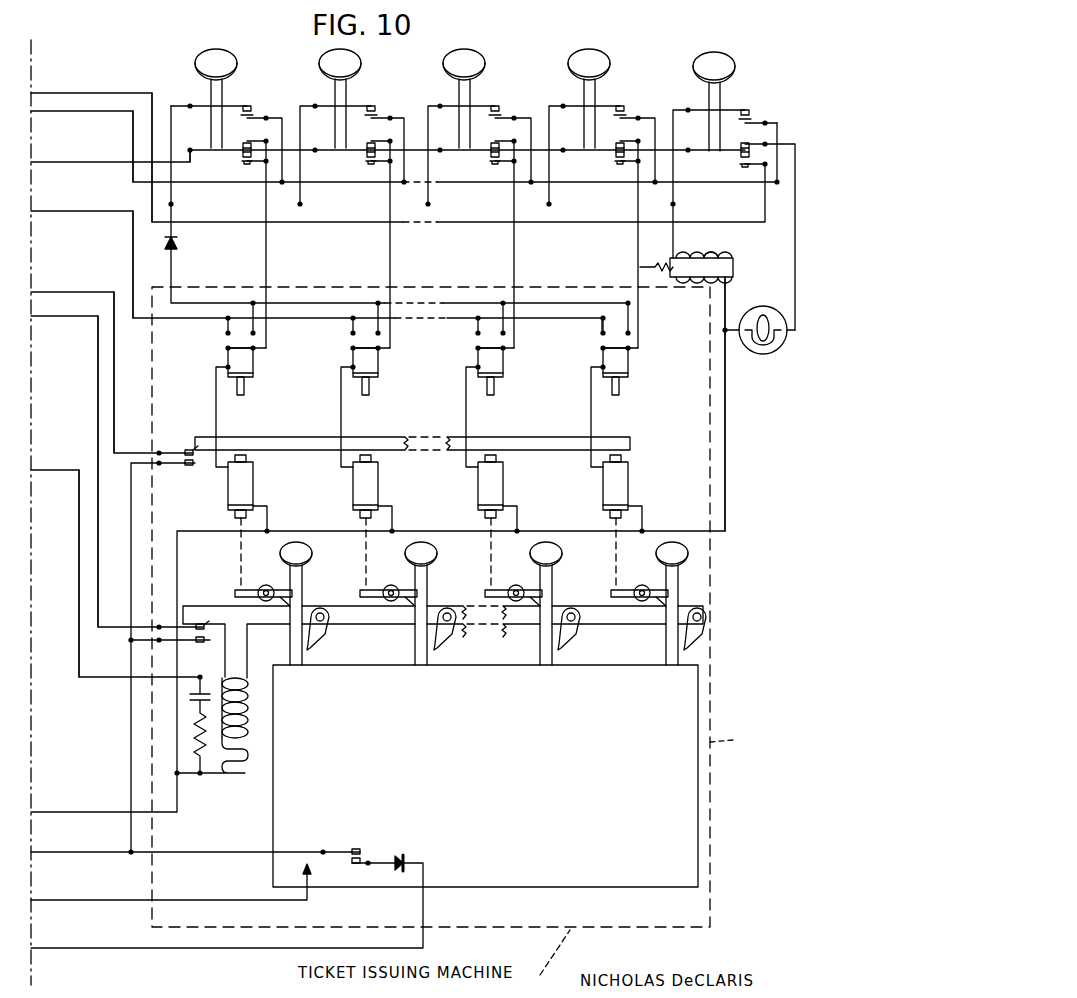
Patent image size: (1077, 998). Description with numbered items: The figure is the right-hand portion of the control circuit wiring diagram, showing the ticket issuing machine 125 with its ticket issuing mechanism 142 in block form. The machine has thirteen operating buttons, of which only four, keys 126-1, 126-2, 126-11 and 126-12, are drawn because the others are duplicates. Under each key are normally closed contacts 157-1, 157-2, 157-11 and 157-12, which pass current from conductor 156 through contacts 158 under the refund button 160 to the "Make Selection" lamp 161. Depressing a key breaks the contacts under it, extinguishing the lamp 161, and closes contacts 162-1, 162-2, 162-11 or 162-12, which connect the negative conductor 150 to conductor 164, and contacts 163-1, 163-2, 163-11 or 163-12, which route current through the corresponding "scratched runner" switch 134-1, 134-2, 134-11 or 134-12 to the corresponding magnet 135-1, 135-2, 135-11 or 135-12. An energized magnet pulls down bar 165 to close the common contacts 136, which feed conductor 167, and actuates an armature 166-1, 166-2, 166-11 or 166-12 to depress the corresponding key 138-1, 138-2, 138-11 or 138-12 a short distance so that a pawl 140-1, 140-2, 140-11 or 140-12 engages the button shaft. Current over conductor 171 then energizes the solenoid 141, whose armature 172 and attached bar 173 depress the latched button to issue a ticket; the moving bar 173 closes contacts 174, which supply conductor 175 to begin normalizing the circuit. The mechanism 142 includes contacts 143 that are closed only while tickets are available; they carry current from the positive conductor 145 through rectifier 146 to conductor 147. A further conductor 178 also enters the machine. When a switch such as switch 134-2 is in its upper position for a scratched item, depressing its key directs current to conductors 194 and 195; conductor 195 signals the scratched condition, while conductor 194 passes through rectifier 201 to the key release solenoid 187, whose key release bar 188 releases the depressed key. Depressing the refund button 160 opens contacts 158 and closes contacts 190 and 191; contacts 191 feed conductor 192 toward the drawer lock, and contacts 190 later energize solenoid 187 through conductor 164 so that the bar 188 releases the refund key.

The ticket issuing machine 125 is at (738, 739).
The selection key 126-1 is at (237, 70).
The selection key 126-2 is at (361, 70).
The selection key 126-11 is at (485, 70).
The selection key 126-12 is at (610, 70).
The scratched runner switch 134-1 is at (253, 365).
The scratched runner switch 134-2 is at (378, 368).
The scratched runner switch 134-11 is at (503, 368).
The scratched runner switch 134-12 is at (628, 368).
The magnet 135-1 is at (253, 486).
The magnet 135-2 is at (378, 486).
The magnet 135-11 is at (503, 486).
The magnet 135-12 is at (628, 486).
The common contacts 136 is at (188, 440).
The ticket issuing key 138-1 is at (316, 543).
The ticket issuing key 138-2 is at (441, 545).
The ticket issuing key 138-11 is at (566, 545).
The ticket issuing key 138-12 is at (688, 556).
The pawl 140-1 is at (326, 627).
The pawl 140-2 is at (453, 627).
The pawl 140-11 is at (577, 627).
The pawl 140-12 is at (703, 627).
The solenoid 141 is at (236, 776).
The ticket issuing mechanism 142 is at (550, 887).
The contacts 143 is at (364, 837).
The positive conductor 145 is at (131, 538).
The rectifier 146 is at (405, 858).
The conductor 147 is at (62, 948).
The negative conductor 150 is at (44, 812).
The conductor 156 is at (70, 162).
The key contacts 157-1 is at (253, 133).
The key contacts 157-2 is at (377, 133).
The key contacts 157-11 is at (501, 133).
The key contacts 157-12 is at (626, 133).
The refund key contacts 158 is at (751, 133).
The refund key 160 is at (735, 73).
The Make Selection lamp 161 is at (770, 306).
The key contacts 162-1 is at (249, 104).
The key contacts 162-2 is at (373, 104).
The key contacts 162-11 is at (497, 104).
The key contacts 162-12 is at (622, 104).
The key contacts 163-1 is at (240, 165).
The key contacts 163-2 is at (364, 165).
The key contacts 163-11 is at (488, 165).
The key contacts 163-12 is at (613, 165).
The conductor 164 is at (70, 111).
The bar 165 is at (273, 437).
The armature 166-1 is at (235, 593).
The armature 166-2 is at (360, 593).
The armature 166-11 is at (485, 593).
The armature 166-12 is at (611, 593).
The conductor 167 is at (58, 292).
The conductor 171 is at (45, 470).
The armature 172 is at (245, 653).
The bar 173 is at (703, 610).
The contacts 174 is at (202, 641).
The conductor 175 is at (52, 316).
The lead 178 is at (62, 900).
The key release solenoid 187 is at (712, 252).
The key release bar 188 is at (733, 268).
The refund key contacts 190 is at (747, 108).
The refund key contacts 191 is at (738, 168).
The conductor 192 is at (68, 93).
The conductor 194 is at (333, 303).
The conductor 195 is at (70, 211).
The rectifier 201 is at (179, 241).